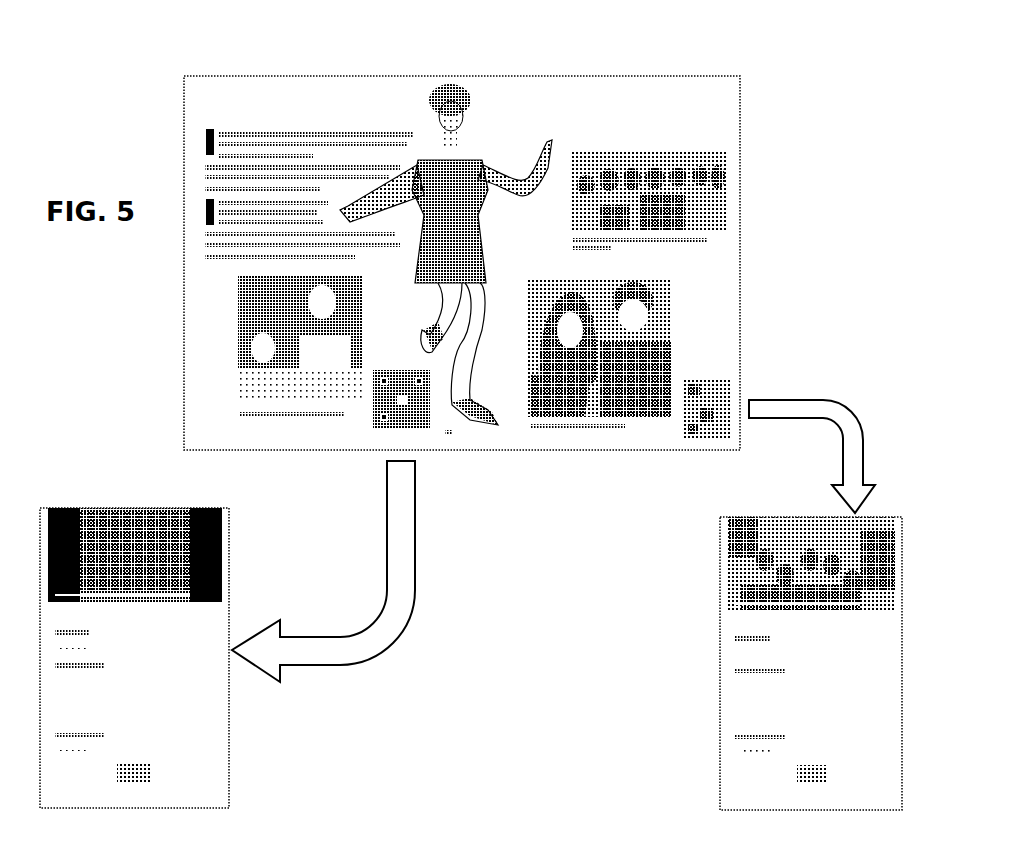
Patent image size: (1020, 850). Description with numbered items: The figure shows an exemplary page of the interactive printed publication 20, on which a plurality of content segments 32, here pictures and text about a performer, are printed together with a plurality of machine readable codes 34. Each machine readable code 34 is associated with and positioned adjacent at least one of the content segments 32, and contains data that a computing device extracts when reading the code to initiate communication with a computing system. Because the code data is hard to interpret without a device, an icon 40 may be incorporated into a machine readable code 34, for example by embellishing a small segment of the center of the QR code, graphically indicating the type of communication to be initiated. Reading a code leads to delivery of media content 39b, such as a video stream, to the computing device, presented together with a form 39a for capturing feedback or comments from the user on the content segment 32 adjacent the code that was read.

The interactive printed publication 20 is at (465, 278).
The content segment 32 is at (680, 136).
The machine readable code 34 is at (402, 428).
The icon 40 is at (712, 394).
The form 39a is at (190, 706).
The media content 39b is at (116, 508).